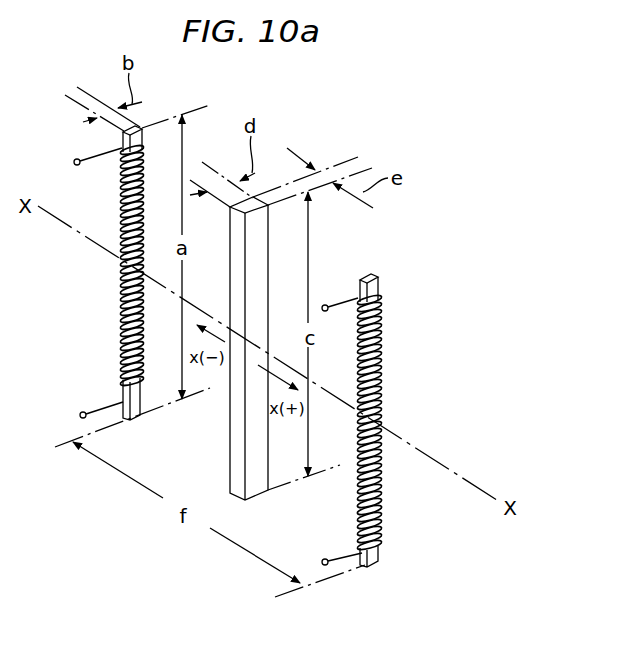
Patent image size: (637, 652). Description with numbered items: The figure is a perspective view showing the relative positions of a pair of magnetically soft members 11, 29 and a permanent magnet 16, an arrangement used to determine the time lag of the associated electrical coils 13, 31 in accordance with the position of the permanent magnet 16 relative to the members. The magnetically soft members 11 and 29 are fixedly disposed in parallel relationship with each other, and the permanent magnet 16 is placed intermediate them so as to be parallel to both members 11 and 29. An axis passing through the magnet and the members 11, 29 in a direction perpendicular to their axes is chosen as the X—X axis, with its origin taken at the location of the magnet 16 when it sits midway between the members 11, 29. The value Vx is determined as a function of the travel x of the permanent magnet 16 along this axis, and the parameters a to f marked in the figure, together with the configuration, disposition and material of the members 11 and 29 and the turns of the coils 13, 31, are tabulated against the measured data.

The magnetically soft member 11 is at (137, 147).
The electrical coil 13 is at (120, 317).
The permanent magnet 16 is at (266, 495).
The magnetically soft member 29 is at (380, 291).
The electrical coil 31 is at (383, 494).